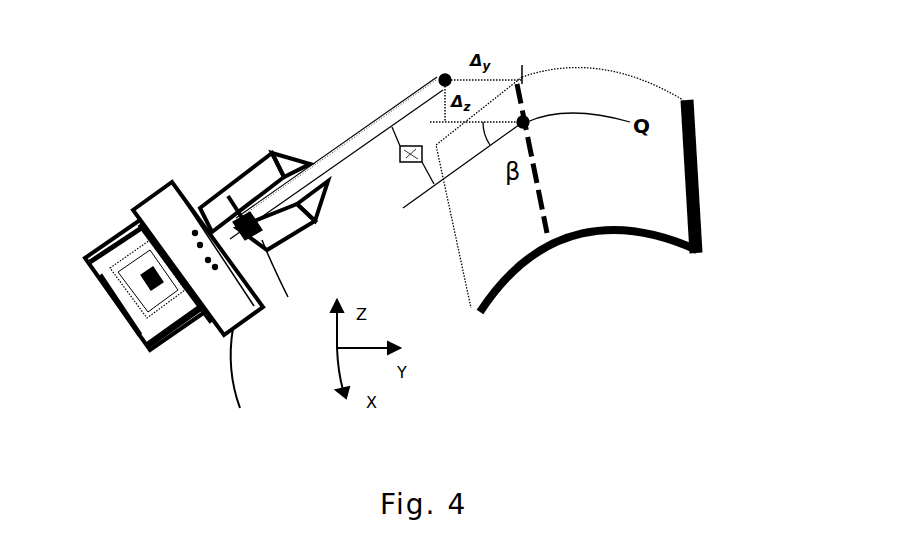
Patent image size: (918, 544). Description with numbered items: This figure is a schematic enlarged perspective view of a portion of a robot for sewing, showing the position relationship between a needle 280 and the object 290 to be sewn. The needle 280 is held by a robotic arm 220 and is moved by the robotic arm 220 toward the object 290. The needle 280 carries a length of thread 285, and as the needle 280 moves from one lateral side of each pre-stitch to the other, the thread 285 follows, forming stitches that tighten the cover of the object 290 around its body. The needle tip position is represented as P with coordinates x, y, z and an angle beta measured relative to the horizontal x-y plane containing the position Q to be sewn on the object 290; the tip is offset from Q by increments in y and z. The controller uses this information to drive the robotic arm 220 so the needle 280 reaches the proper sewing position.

The robotic arm 220 is at (152, 186).
The needle 280 is at (338, 150).
The thread 285 is at (231, 363).
The object 290 is at (652, 215).